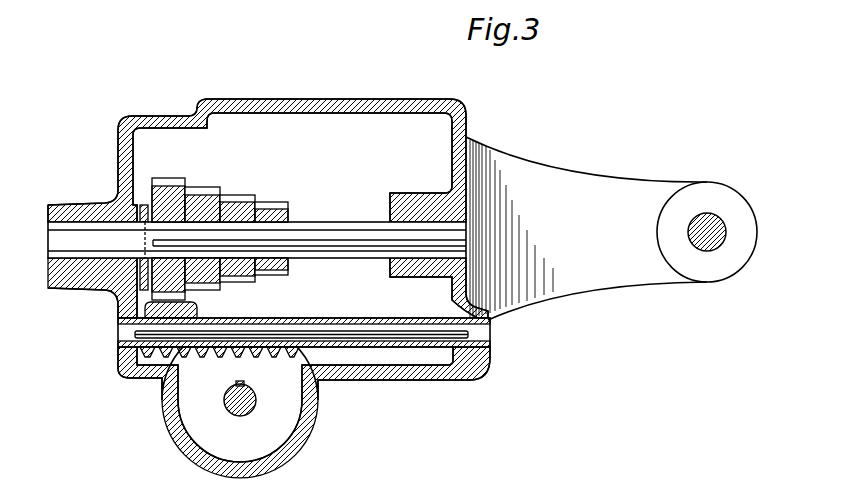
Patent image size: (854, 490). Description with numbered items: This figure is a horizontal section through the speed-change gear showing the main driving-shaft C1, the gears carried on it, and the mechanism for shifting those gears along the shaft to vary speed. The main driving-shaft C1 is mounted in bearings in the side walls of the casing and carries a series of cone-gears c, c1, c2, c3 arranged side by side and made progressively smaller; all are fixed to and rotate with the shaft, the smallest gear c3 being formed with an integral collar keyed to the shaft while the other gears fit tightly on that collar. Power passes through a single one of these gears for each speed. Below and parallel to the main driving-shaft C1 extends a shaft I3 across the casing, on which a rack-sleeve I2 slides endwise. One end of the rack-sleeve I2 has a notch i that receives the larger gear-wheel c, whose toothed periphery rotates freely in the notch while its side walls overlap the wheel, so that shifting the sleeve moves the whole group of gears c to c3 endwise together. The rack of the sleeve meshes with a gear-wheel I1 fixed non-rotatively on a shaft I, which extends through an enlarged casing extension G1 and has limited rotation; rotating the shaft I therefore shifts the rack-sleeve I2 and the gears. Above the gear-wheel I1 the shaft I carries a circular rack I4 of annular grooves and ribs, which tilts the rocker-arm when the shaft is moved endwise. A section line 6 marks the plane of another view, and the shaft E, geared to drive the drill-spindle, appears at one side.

The cone-gear c is at (172, 185).
The cone-gear c1 is at (198, 190).
The cone-gear c2 is at (242, 197).
The cone-gear c3 is at (278, 200).
The main driving-shaft C1 is at (343, 224).
The shaft E is at (726, 232).
The notch i is at (118, 317).
The rack-sleeve I2 is at (303, 318).
The shaft I3 is at (360, 330).
The shaft I is at (227, 412).
The gear-wheel I1 is at (267, 420).
The circular rack I4 is at (161, 10).
The section line 6 is at (228, 0).
The casing extension G1 is at (277, 0).